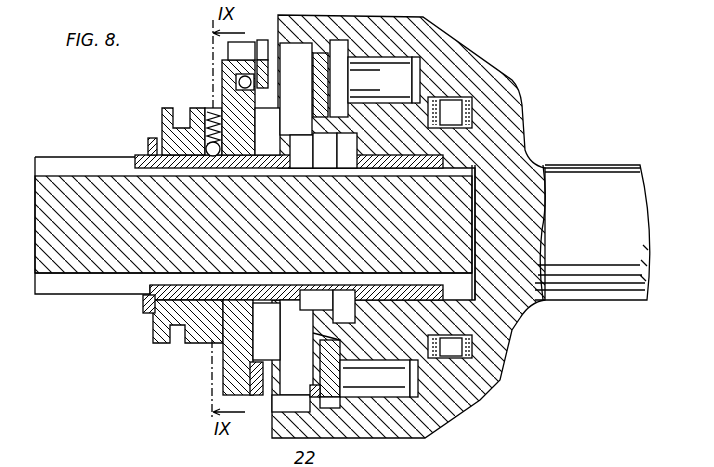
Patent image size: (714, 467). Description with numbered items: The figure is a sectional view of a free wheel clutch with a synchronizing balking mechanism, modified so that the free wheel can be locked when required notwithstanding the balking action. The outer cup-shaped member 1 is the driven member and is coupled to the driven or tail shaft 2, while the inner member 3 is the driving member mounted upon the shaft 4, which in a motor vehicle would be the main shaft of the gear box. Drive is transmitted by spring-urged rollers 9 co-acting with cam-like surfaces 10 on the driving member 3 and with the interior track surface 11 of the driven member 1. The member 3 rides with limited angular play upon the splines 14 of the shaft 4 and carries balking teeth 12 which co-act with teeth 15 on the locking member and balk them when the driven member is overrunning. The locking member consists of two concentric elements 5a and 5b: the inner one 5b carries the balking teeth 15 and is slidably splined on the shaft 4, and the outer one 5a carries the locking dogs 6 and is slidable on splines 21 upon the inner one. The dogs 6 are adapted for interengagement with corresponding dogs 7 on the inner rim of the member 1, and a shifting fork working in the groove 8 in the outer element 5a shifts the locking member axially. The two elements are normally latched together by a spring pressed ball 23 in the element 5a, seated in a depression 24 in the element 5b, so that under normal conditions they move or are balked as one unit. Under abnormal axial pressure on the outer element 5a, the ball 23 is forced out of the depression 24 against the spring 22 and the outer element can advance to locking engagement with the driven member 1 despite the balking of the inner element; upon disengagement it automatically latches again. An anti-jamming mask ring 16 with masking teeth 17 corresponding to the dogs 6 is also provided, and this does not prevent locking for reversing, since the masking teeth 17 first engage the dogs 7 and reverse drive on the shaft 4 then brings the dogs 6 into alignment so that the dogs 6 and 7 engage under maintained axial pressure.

The outer cup-shaped member 1 is at (476, 68).
The driven or tail shaft 2 is at (590, 205).
The inner member 3 is at (472, 130).
The shaft 4 is at (90, 260).
The outer element of the locking member 5a is at (289, 279).
The inner element of the locking member 5b is at (148, 303).
The dogs 6 is at (240, 50).
The dogs 7 is at (297, 48).
The shifting collar groove 8 is at (180, 335).
The spring-urged rollers 9 is at (375, 78).
The cam-like surfaces 10 is at (420, 100).
The interior track surface 11 is at (400, 395).
The balking teeth 12 is at (325, 142).
The splines 14 is at (445, 172).
The teeth or dogs 15 is at (300, 150).
The mask ring 16 is at (262, 385).
The masking teeth 17 is at (262, 56).
The splines 21 is at (150, 325).
The spring 22 is at (213, 148).
The spring pressed ball 23 is at (267, 131).
The depression 24 is at (152, 146).